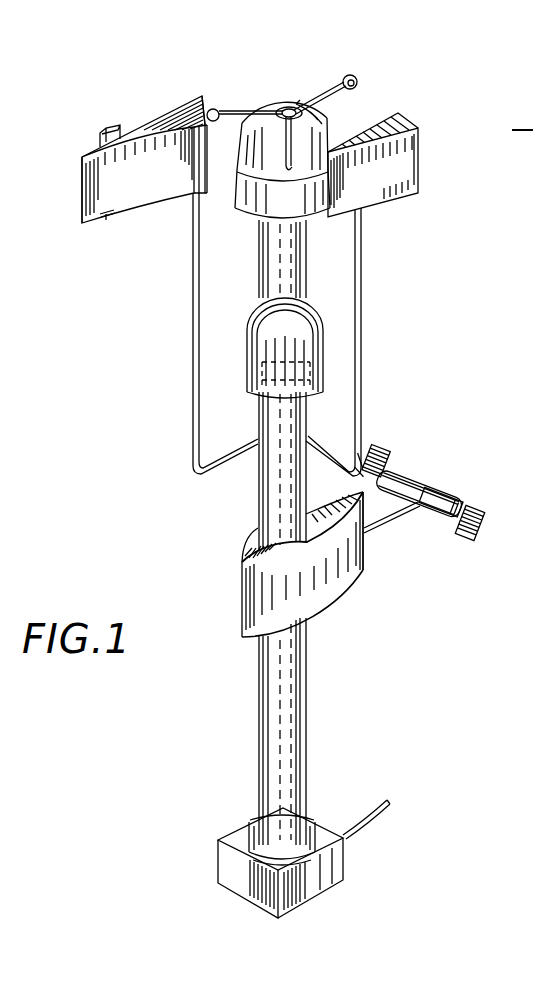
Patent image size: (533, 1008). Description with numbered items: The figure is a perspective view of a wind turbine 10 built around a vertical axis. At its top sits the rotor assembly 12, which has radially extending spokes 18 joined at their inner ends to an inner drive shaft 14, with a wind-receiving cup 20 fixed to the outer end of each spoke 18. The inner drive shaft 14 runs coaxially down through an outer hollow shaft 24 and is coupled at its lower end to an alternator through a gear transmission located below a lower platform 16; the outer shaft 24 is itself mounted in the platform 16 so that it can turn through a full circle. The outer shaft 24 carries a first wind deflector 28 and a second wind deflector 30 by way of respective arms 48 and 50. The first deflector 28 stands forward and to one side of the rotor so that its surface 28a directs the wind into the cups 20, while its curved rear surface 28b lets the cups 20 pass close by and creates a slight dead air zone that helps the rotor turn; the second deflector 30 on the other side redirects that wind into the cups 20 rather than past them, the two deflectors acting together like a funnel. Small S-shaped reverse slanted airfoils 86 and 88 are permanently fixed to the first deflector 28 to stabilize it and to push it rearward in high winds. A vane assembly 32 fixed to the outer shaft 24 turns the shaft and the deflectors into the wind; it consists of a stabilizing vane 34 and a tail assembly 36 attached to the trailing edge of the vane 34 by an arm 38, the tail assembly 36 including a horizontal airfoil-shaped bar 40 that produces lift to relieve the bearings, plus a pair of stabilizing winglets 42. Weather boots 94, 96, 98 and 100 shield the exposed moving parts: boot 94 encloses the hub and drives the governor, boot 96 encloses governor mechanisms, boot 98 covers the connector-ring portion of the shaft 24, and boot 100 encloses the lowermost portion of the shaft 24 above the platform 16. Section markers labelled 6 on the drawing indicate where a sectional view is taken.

The wind turbine 10 is at (156, 462).
The vertical axis rotor assembly 12 is at (300, 95).
The inner drive shaft 14 is at (291, 750).
The lower platform 16 is at (217, 838).
The spokes 18 is at (250, 112).
The wind-receiving cup 20 is at (217, 110).
The outer hollow shaft 24 is at (302, 692).
The first wind deflector 28 is at (153, 117).
The surface 28a is at (95, 194).
The rear surface 28b is at (202, 102).
The second wind deflector 30 is at (426, 167).
The vane assembly 32 is at (337, 608).
The stabilizing vane 34 is at (347, 568).
The tail assembly 36 is at (452, 492).
The arm 38 is at (387, 527).
The horizontal bar 40 is at (427, 483).
The stabilizing winglets 42 is at (393, 453).
The arm 48 is at (190, 383).
The arm 50 is at (362, 268).
The small airfoil 86 is at (110, 127).
The small airfoil 88 is at (110, 213).
The weather boot 94 is at (313, 141).
The weather boot 96 is at (238, 204).
The weather boot 98 is at (251, 378).
The weather boot 100 is at (256, 816).
The section line 6- 6 is at (243, 352).